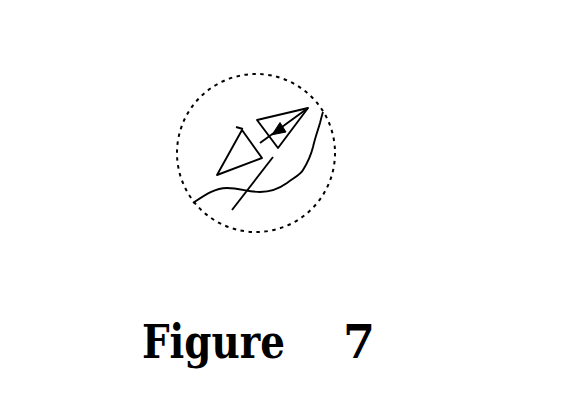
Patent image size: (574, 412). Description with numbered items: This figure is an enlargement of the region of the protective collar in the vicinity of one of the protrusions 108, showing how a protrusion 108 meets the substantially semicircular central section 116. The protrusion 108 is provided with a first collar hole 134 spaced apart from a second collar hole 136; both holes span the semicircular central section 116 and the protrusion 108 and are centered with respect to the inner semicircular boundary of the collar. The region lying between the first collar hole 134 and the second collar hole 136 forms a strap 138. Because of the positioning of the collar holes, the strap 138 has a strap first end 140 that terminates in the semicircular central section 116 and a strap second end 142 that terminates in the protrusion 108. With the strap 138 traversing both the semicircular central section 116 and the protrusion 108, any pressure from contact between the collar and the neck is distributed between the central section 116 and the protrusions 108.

The semicircular central section 116 is at (255, 95).
The first collar hole 134 is at (224, 153).
The strap first end 140 is at (236, 127).
The straps 138 is at (308, 108).
The second collar hole 136 is at (295, 130).
The strap second end 142 is at (232, 210).
The protrusion 108 is at (308, 167).